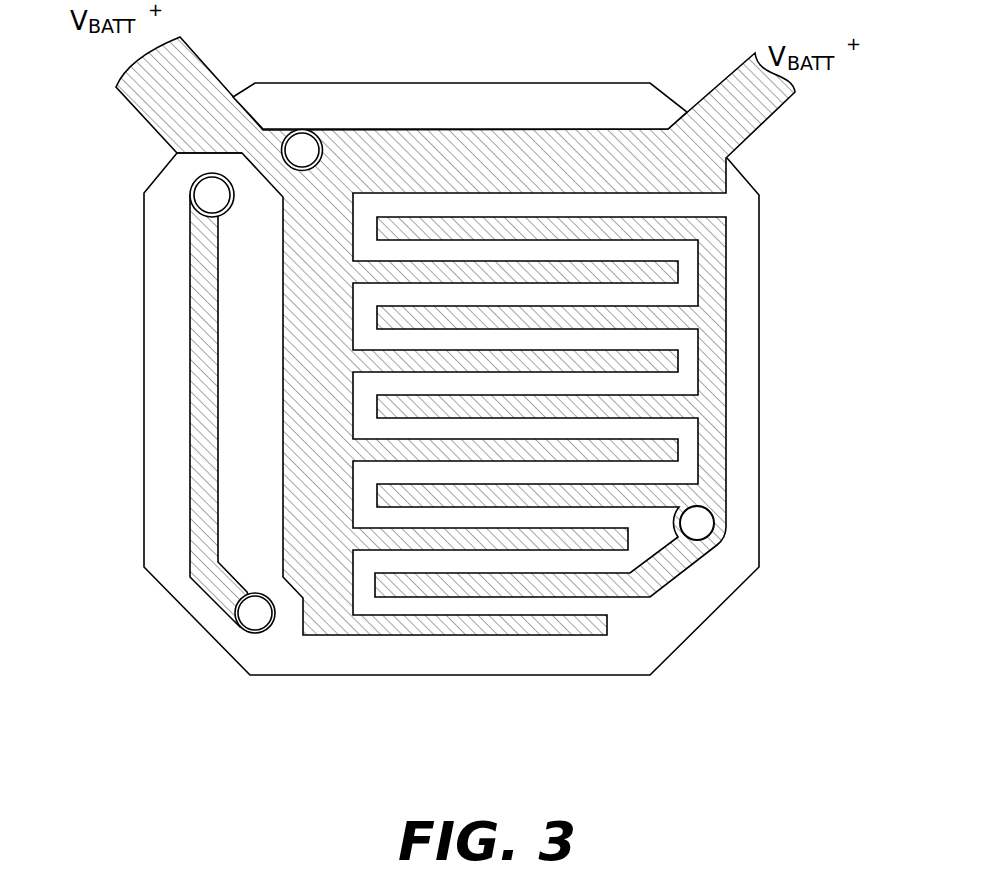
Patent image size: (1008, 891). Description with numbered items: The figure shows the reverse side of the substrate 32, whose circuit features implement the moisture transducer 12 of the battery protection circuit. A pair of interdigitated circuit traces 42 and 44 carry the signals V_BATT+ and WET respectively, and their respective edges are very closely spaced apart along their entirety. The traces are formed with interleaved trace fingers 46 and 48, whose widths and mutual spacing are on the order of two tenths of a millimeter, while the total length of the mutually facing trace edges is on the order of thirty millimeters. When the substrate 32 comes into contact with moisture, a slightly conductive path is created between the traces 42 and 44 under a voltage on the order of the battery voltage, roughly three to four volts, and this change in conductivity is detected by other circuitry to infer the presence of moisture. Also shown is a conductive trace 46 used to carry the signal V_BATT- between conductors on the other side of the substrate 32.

The moisture transducer 12 is at (742, 641).
The substrate 32 is at (293, 82).
The circuit trace 42 is at (342, 633).
The circuit trace 44 is at (613, 407).
The trace finger 46 is at (190, 356).
The trace finger 48 is at (592, 572).